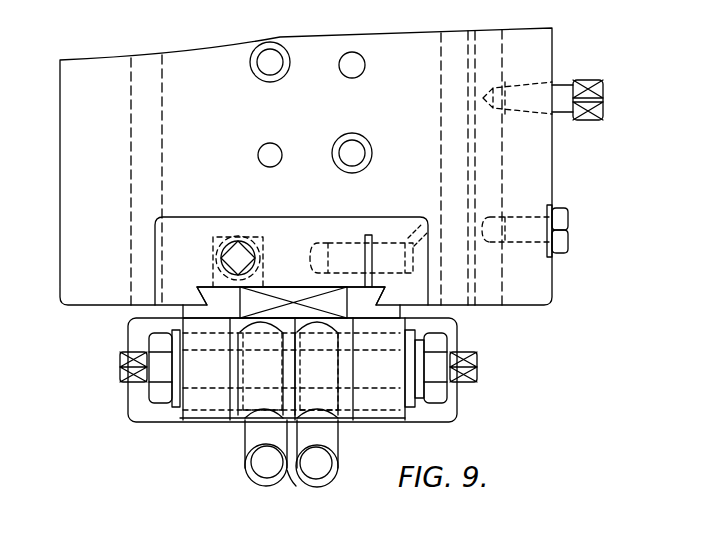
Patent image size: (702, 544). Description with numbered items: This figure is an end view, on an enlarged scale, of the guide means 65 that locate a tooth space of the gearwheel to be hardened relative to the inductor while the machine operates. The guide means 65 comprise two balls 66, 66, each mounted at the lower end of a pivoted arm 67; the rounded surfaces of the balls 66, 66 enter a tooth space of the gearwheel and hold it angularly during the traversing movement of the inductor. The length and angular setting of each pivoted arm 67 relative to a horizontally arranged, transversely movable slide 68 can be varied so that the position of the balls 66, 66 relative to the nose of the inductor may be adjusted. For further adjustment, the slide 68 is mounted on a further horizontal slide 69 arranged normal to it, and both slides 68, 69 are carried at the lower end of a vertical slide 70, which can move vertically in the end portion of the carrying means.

The guide means 65 is at (292, 484).
The ball 66 is at (250, 457).
The pivoted arm 67 is at (246, 428).
The slide 68 is at (404, 421).
The further horizontal slide 69 is at (392, 313).
The vertical slide 70 is at (117, 200).